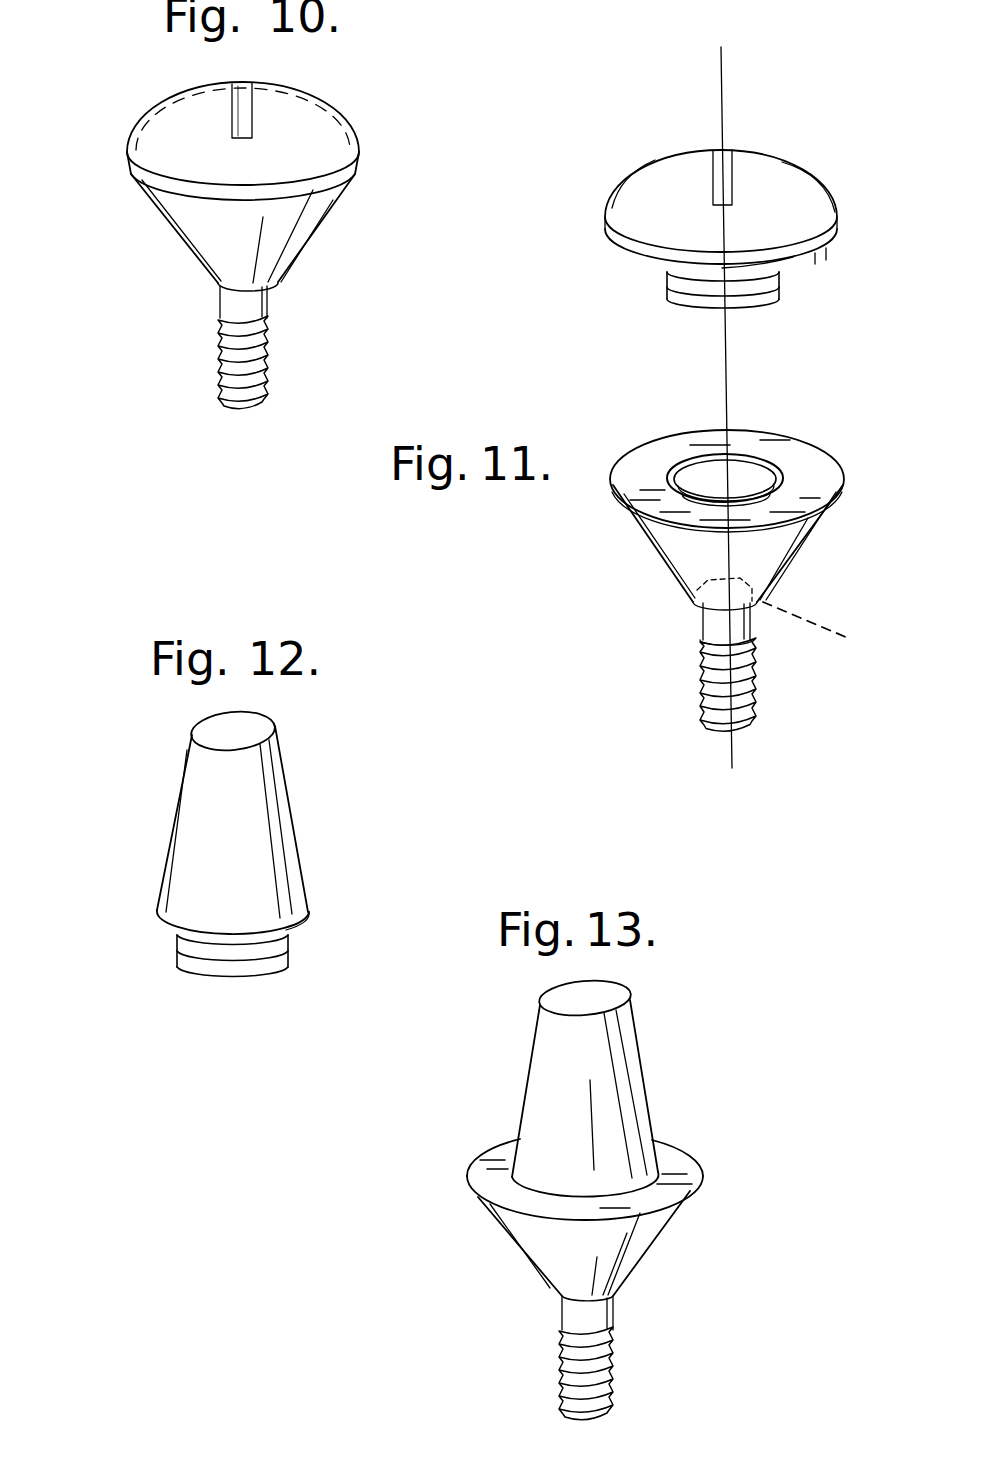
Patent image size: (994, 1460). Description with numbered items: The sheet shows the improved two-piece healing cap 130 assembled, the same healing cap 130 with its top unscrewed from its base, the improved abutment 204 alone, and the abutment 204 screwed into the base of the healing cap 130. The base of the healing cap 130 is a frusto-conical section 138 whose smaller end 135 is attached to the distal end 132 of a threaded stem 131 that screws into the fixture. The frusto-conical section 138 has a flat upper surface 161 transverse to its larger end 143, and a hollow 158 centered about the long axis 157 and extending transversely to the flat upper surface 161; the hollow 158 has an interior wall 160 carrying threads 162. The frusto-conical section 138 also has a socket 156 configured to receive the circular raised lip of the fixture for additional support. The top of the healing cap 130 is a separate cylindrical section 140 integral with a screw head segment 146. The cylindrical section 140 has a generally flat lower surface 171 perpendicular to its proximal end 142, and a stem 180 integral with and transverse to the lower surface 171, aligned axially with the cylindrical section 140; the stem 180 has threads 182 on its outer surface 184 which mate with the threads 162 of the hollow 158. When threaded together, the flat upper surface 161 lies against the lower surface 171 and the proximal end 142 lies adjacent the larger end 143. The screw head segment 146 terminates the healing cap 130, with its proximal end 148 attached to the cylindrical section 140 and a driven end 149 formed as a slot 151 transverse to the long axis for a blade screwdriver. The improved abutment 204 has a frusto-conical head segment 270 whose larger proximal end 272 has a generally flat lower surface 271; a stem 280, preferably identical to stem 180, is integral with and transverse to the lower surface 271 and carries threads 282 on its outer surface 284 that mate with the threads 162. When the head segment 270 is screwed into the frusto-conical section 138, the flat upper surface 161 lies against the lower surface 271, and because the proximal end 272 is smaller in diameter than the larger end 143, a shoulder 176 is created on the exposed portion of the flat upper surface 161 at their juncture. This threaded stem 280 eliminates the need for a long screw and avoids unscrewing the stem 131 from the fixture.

In FIG. 10, the improved healing cap 130 is at (117, 162).
In FIG. 11, the improved healing cap 130 is at (638, 770).
In FIG. 10, the stem 131 is at (220, 347).
In FIG. 11, the stem 131 is at (707, 663).
In FIG. 13, the stem 131 is at (560, 1383).
In FIG. 10, the distal end of stem 132 is at (217, 302).
In FIG. 11, the distal end of stem 132 is at (712, 627).
In FIG. 13, the distal end of stem 132 is at (561, 1317).
In FIG. 10, the smaller end of frusto-conical section 135 is at (278, 286).
In FIG. 10, the frusto-conical section 138 is at (313, 243).
In FIG. 11, the frusto-conical section 138 is at (790, 570).
In FIG. 13, the frusto-conical section 138 is at (641, 1262).
In FIG. 10, the cylindrical section 140 is at (363, 157).
In FIG. 11, the cylindrical section 140 is at (842, 236).
In FIG. 11, the proximal end of cylindrical section 142 is at (827, 252).
In FIG. 11, the larger end of frusto-conical section 143 is at (827, 503).
In FIG. 13, the larger end of frusto-conical section 143 is at (489, 1202).
In FIG. 10, the screw head segment 146 is at (340, 128).
In FIG. 11, the screw head segment 146 is at (807, 180).
In FIG. 11, the proximal end of screw head segment 148 is at (836, 218).
In FIG. 11, the driven end 149 is at (777, 158).
In FIG. 11, the slot 151 is at (723, 153).
In FIG. 11, the socket 156 is at (826, 629).
In FIG. 11, the long axis 157 is at (722, 82).
In FIG. 11, the hollow 158 is at (767, 467).
In FIG. 11, the interior wall 160 is at (718, 460).
In FIG. 11, the flat upper surface 161 is at (822, 482).
In FIG. 13, the flat upper surface 161 is at (480, 1160).
In FIG. 11, the threads 162 is at (688, 463).
In FIG. 11, the lower surface 171 is at (810, 261).
In FIG. 13, the shoulder 176 is at (672, 1188).
In FIG. 11, the stem 180 is at (664, 281).
In FIG. 11, the threads 182 is at (728, 308).
In FIG. 11, the outer surface 184 is at (693, 297).
In FIG. 12, the improved abutment 204 is at (303, 852).
In FIG. 13, the improved abutment 204 is at (654, 1104).
In FIG. 12, the head segment 270 is at (273, 812).
In FIG. 13, the head segment 270 is at (626, 1075).
In FIG. 12, the lower surface 271 is at (293, 925).
In FIG. 12, the proximal end of head segment 272 is at (292, 927).
In FIG. 13, the proximal end of head segment 272 is at (659, 1173).
In FIG. 12, the stem 280 is at (174, 936).
In FIG. 12, the threads 282 is at (178, 958).
In FIG. 12, the outer surface 284 is at (202, 977).